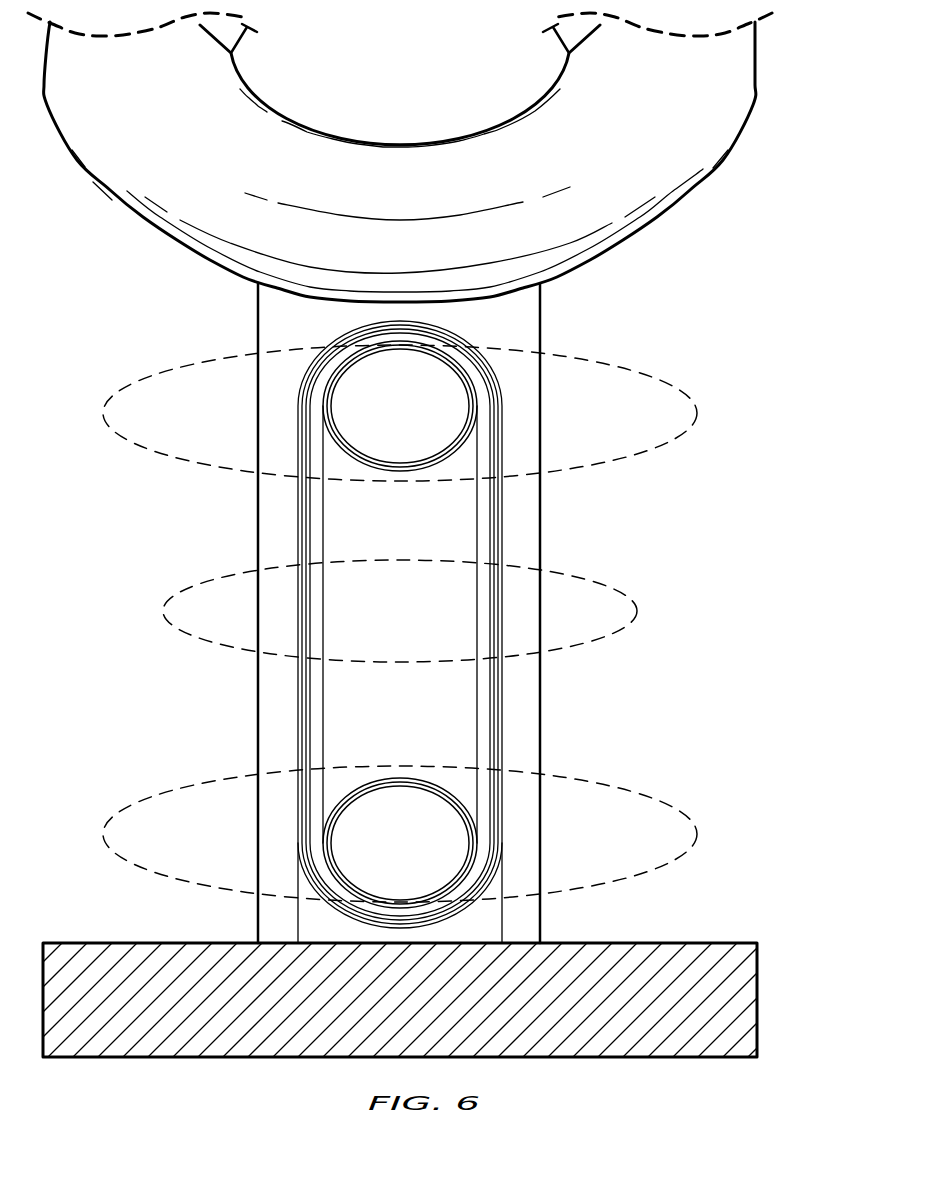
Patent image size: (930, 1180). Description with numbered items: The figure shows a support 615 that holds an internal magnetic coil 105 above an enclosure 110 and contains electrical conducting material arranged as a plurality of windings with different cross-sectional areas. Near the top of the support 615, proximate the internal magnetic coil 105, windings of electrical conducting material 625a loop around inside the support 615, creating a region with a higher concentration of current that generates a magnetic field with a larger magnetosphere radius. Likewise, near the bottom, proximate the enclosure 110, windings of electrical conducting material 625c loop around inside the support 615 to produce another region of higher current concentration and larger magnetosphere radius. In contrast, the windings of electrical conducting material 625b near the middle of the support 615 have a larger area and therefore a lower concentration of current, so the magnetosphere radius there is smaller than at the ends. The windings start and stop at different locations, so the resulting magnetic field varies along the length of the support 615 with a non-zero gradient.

The internal magnetic coil 105 is at (752, 99).
The support 615 is at (540, 307).
The electrical conducting material windings 625a is at (470, 398).
The electrical conducting material windings 625b is at (502, 517).
The electrical conducting material windings 625c is at (453, 802).
The enclosure 110 is at (587, 1057).